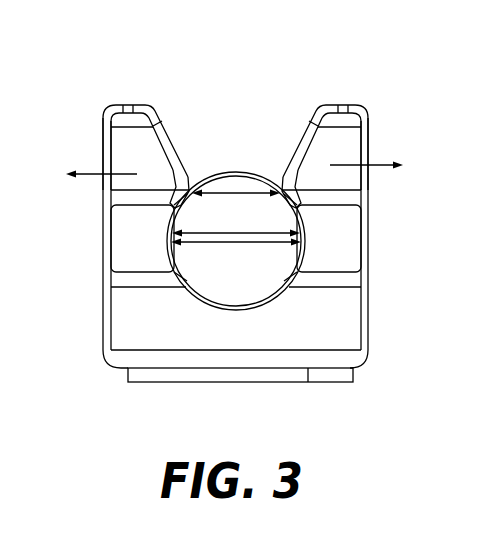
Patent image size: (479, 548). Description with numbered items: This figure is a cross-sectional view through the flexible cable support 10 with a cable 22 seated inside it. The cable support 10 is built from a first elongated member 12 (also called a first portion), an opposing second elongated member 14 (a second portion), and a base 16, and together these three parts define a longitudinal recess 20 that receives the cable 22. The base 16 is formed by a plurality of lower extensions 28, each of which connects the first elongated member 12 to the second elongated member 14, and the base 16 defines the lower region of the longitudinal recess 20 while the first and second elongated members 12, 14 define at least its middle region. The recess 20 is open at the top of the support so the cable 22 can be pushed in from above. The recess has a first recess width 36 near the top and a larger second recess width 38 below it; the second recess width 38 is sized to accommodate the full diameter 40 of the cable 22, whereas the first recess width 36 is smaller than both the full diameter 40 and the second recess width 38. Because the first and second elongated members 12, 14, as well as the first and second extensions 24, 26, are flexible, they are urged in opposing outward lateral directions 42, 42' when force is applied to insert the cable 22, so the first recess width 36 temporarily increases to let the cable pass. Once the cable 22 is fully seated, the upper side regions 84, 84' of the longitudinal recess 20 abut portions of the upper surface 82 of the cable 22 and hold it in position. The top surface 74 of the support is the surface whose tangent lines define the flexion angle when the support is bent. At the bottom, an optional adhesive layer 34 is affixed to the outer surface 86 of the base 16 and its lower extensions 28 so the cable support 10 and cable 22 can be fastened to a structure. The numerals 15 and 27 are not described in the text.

The flexible cable support 10 is at (384, 101).
The first elongated member 12 is at (348, 250).
The second elongated member 14 is at (122, 240).
The clamp halves 15 is at (285, 260).
The base 16 is at (320, 327).
The longitudinal recess 20 is at (190, 275).
The cable 22 is at (215, 272).
The first extension 24 is at (350, 155).
The second extension 26 is at (124, 152).
The arms 27 is at (130, 147).
The lower extension 28 is at (279, 324).
The adhesive layer 34 is at (343, 382).
The first recess width 36 is at (229, 190).
The second recess width 38 is at (300, 252).
The full diameter 40 is at (352, 226).
The outward lateral direction 42 is at (95, 199).
The outward lateral direction 42' is at (391, 156).
The top surface 74 is at (128, 104).
The upper surface 82 is at (194, 190).
The upper side region 84 is at (176, 149).
The upper side region 84' is at (287, 157).
The outer surface 86 is at (307, 382).